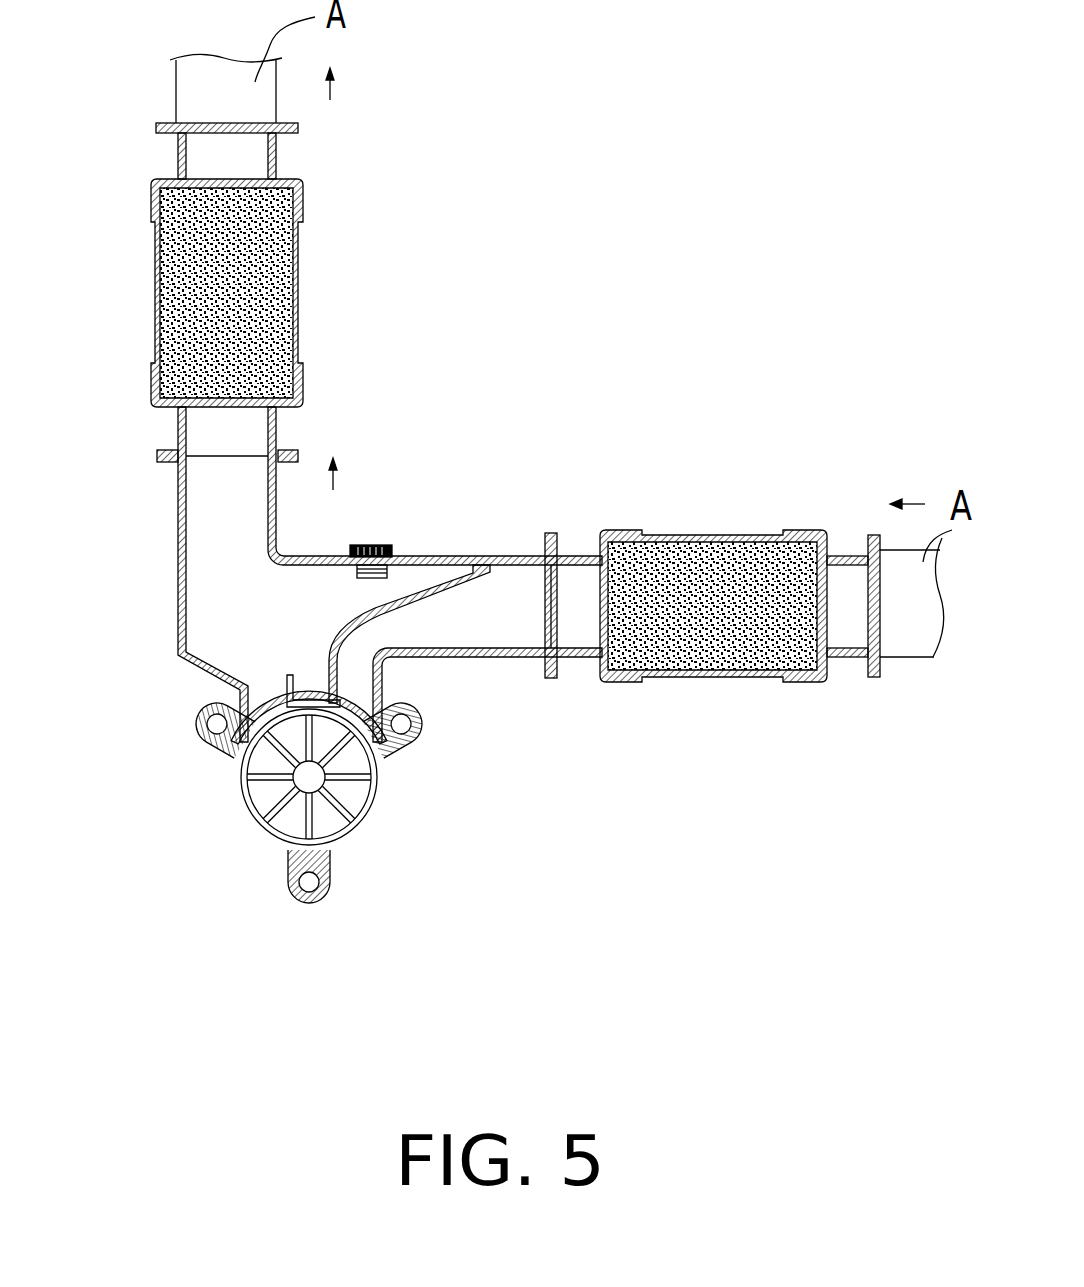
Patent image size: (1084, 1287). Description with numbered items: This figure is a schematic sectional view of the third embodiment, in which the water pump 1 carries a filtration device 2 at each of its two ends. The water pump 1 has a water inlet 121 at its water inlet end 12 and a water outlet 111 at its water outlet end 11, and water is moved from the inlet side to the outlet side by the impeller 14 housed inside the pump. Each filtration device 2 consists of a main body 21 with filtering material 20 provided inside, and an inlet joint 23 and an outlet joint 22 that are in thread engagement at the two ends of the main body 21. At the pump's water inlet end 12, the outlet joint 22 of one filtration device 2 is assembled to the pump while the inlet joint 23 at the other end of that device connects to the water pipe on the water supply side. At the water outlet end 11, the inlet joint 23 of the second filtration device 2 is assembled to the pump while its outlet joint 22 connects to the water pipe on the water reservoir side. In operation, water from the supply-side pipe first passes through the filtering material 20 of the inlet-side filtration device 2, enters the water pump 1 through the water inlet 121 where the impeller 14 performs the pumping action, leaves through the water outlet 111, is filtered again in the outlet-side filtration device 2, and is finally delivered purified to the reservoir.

The water pump 1 is at (208, 805).
The water outlet end 11 is at (278, 505).
The water outlet 111 is at (217, 470).
The water inlet end 12 is at (507, 658).
The water inlet 121 is at (523, 575).
The impeller 14 is at (360, 795).
The filtration device 2 is at (323, 278).
The filtering material 20 is at (158, 290).
The main body 21 is at (298, 312).
The outlet joint 22 is at (278, 156).
The inlet joint 23 is at (278, 430).